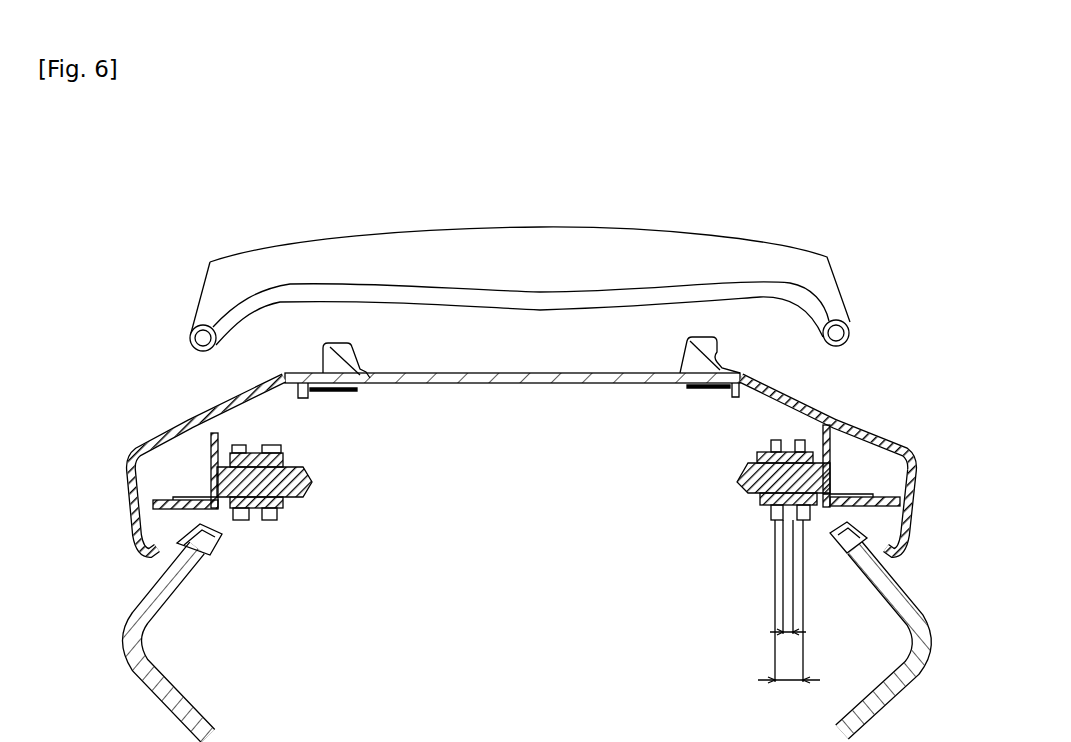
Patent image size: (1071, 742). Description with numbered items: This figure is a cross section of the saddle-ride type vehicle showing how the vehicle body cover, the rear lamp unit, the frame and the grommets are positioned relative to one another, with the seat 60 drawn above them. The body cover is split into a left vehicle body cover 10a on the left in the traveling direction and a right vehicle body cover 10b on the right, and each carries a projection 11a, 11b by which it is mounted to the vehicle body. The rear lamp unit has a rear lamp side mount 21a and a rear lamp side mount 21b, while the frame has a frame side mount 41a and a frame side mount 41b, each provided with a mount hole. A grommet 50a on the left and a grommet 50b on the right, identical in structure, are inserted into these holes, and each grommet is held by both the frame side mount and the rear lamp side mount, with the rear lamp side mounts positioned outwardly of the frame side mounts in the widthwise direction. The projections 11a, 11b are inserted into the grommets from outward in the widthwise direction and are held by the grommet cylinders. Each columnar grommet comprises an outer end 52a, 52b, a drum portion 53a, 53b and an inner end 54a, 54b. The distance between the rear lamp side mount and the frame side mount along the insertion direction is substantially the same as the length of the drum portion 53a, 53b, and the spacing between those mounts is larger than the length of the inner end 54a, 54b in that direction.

The seat 60 is at (590, 246).
The left vehicle body cover 10a is at (150, 440).
The right vehicle body cover 10b is at (897, 440).
The projection 11a is at (305, 483).
The projection 11b is at (746, 481).
The rear lamp side mount 21a is at (250, 441).
The rear lamp side mount 21b is at (783, 440).
The frame side mount 41a is at (270, 445).
The frame side mount 41b is at (772, 443).
The grommet 50a is at (306, 506).
The grommet 50b is at (745, 554).
The outer end 52a is at (234, 520).
The outer end 52b is at (812, 515).
The drum portion 53a is at (254, 518).
The drum portion 53b is at (757, 500).
The inner end 54a is at (278, 514).
The inner end 54b is at (765, 512).